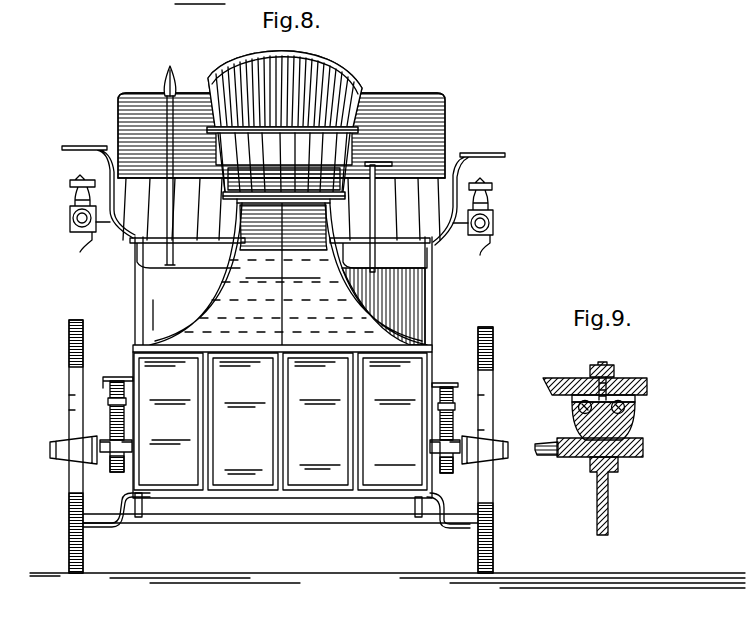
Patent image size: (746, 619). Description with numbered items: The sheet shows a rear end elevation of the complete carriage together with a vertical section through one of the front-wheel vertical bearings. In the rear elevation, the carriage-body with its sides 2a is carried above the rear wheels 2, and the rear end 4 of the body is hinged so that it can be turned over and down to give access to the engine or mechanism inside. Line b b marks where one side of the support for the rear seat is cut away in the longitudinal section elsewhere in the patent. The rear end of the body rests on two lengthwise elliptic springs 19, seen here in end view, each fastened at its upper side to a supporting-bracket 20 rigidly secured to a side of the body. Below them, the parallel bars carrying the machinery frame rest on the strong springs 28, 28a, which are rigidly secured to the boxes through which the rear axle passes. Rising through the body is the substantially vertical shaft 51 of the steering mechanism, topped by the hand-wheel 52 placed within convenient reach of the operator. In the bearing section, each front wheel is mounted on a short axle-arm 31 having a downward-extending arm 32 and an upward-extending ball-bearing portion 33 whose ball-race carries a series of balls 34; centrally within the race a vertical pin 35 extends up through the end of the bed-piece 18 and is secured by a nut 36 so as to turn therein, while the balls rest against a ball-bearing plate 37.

In FIG. 8, the rear wheels 2 is at (68, 385).
In FIG. 8, the sides of the carriage-body 2a is at (147, 323).
In FIG. 8, the rear end 4 is at (270, 492).
In FIG. 8, the section line b b is at (245, 204).
In FIG. 9, the bed-piece 18 is at (555, 385).
In FIG. 8, the elliptic springs 19 is at (112, 408).
In FIG. 8, the supporting-brackets 20 is at (125, 377).
In FIG. 8, the spring 28 is at (446, 466).
In FIG. 8, the spring 28a is at (91, 465).
In FIG. 9, the axle-arm 31 is at (543, 452).
In FIG. 9, the downward-extending arm 32 is at (598, 500).
In FIG. 9, the ball-bearing portion 33 is at (582, 432).
In FIG. 9, the balls 34 is at (632, 416).
In FIG. 9, the vertical pin 35 is at (596, 392).
In FIG. 9, the nut 36 is at (605, 366).
In FIG. 9, the ball-bearing plate 37 is at (580, 380).
In FIG. 8, the vertical shaft 51 is at (375, 190).
In FIG. 8, the hand-wheel 52 is at (382, 160).